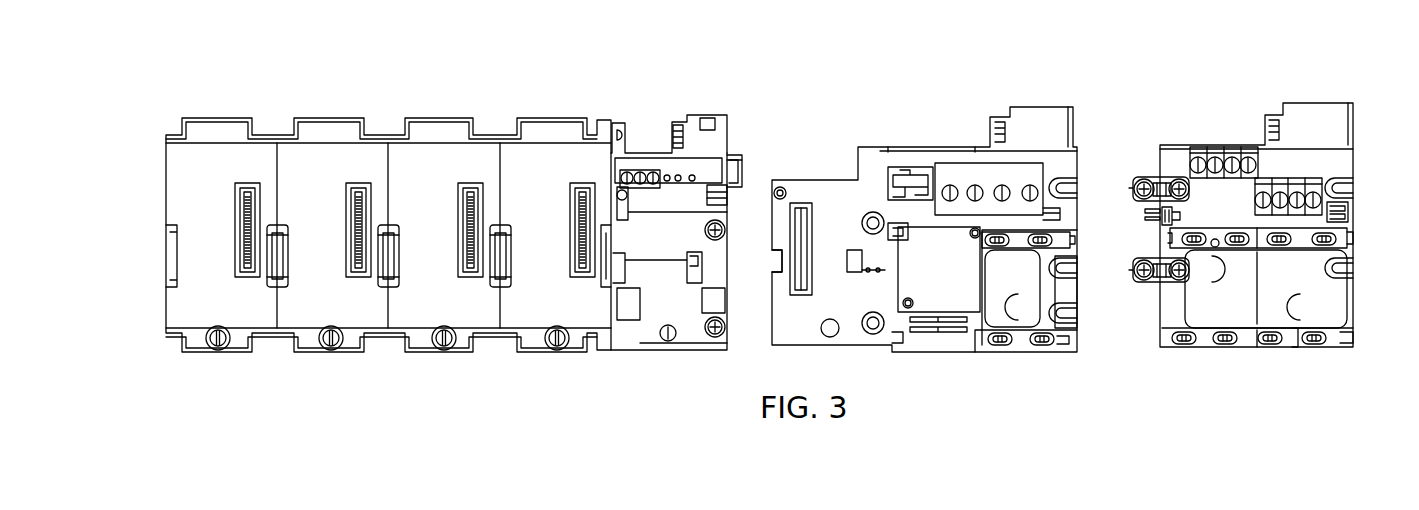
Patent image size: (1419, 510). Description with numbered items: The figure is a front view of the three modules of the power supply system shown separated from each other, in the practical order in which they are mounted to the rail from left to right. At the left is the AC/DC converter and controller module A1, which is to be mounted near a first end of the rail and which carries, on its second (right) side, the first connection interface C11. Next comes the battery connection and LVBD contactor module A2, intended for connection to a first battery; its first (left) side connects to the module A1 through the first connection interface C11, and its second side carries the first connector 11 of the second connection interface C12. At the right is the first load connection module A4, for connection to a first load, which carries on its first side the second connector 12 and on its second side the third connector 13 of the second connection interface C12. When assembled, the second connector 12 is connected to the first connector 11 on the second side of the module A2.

The AC/DC converter and controller module A1 is at (323, 152).
The battery connection and LVBD contactor module A2 is at (873, 157).
The first load connection module A4 is at (1297, 150).
The first connection interface C11 is at (758, 125).
The second connection interface C12 is at (1098, 123).
The first connector 11 is at (1089, 238).
The second connector 12 is at (1138, 219).
The third connector 13 is at (1360, 240).